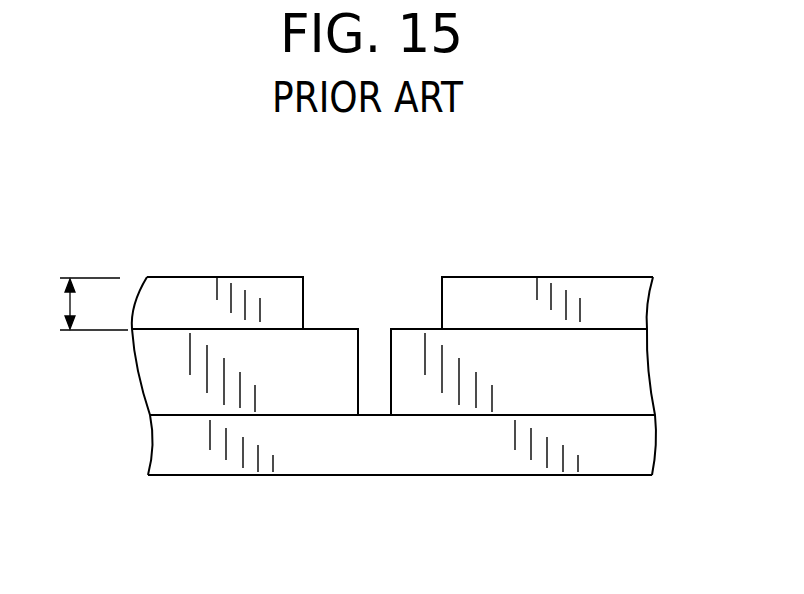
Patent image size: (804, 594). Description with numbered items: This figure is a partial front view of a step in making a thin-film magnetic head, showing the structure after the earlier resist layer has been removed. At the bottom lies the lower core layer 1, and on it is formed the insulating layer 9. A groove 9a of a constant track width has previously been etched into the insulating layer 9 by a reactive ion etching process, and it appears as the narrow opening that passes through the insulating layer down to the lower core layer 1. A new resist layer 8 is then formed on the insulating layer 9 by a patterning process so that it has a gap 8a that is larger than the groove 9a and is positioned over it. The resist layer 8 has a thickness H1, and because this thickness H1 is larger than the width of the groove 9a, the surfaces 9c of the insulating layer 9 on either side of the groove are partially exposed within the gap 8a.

The resist layer 8 is at (182, 297).
The insulating layer 9 is at (155, 386).
The lower core layer 1 is at (630, 442).
The surfaces of the insulating layer 9c is at (326, 329).
The gap 8a is at (376, 290).
The groove 9a is at (380, 398).
The thickness of the resist layer H1 is at (79, 304).